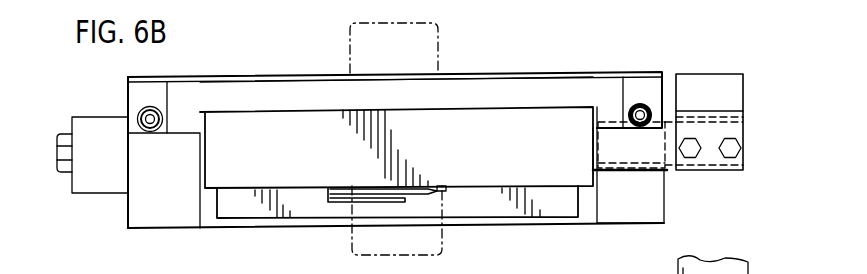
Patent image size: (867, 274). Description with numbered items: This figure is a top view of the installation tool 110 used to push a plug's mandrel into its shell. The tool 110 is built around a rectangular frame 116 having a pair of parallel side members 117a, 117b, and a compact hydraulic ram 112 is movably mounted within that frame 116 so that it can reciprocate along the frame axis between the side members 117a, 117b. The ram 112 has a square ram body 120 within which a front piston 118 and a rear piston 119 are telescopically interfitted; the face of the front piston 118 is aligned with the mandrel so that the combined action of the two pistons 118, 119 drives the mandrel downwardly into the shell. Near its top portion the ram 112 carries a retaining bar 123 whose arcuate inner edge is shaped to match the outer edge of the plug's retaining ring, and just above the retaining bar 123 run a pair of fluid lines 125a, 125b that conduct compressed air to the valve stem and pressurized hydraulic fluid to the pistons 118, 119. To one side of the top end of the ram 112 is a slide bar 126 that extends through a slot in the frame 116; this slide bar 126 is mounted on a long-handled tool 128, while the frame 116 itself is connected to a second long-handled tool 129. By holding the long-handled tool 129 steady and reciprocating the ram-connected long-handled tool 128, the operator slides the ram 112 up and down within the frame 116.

The installation tool 110 is at (548, 65).
The compact hydraulic ram 112 is at (477, 155).
The rectangular frame 116 is at (392, 103).
The side member 117a is at (143, 204).
The side member 117b is at (642, 206).
The front piston 118 is at (415, 236).
The rear piston 119 is at (417, 47).
The square ram body 120 is at (271, 128).
The retaining bar 123 is at (553, 200).
The fluid line 125a is at (340, 203).
The fluid line 125b is at (436, 192).
The slide bar 126 is at (639, 160).
The long-handled tool 128 is at (710, 88).
The second long-handled tool 129 is at (93, 120).